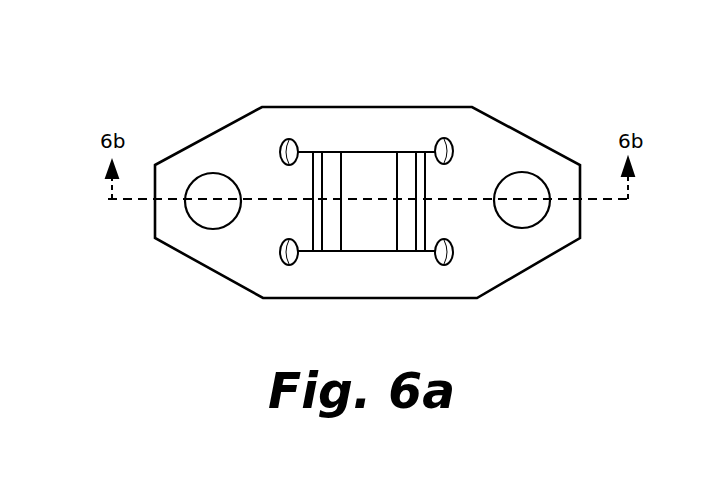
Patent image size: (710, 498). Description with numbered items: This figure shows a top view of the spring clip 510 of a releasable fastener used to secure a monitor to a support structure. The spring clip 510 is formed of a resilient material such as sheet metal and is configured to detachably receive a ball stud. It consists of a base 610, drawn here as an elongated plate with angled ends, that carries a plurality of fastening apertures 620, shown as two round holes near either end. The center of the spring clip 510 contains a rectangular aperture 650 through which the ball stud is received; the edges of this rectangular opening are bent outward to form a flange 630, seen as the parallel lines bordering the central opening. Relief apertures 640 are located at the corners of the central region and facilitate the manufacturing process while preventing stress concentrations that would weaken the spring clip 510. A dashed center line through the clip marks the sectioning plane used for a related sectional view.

The spring clip 510 is at (160, 84).
The base 610 is at (242, 287).
The fastening apertures 620 is at (205, 230).
The flange 630 is at (317, 257).
The relief apertures 640 is at (445, 252).
The rectangular aperture 650 is at (370, 163).